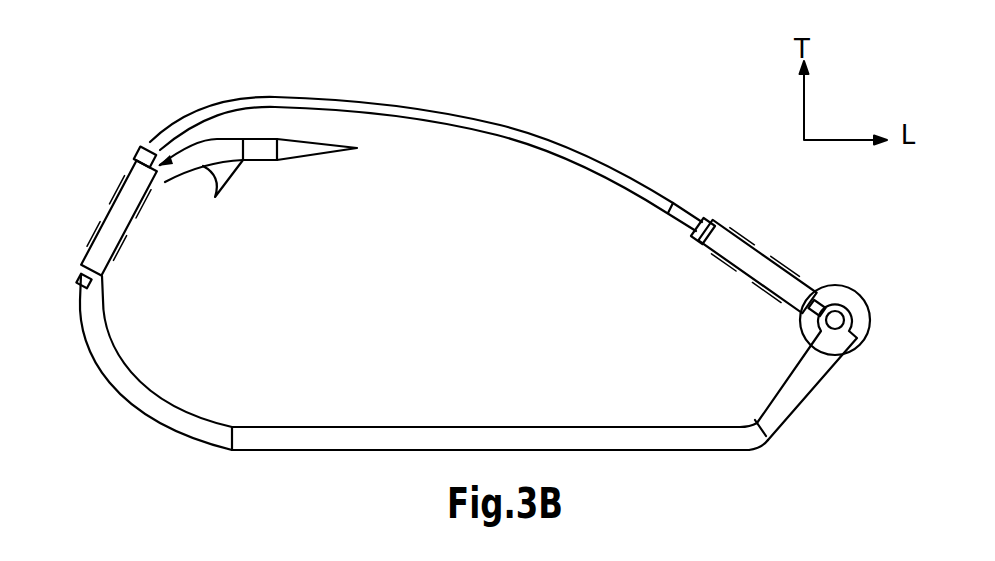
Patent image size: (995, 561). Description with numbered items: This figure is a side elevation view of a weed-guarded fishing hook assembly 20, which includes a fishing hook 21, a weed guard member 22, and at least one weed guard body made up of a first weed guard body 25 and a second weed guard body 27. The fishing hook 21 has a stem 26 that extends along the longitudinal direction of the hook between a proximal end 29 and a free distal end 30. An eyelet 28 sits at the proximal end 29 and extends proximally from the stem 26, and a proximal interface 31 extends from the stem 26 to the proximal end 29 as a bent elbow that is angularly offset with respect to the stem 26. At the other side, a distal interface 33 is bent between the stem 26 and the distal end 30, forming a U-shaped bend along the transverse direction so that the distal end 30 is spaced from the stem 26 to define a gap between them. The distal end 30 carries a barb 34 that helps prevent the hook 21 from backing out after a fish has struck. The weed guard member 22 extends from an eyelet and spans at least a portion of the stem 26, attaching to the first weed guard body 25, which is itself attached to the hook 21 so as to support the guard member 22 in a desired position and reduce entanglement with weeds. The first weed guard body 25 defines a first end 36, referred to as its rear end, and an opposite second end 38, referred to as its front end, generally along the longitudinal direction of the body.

The weed-guarded fishing hook assembly 20 is at (122, 100).
The fishing hook 21 is at (358, 452).
The weed guard member 22 is at (477, 127).
The first weed guard body 25 is at (110, 195).
The stem 26 is at (627, 452).
The second weed guard body 27 is at (774, 245).
The eyelet 28 is at (870, 310).
The proximal end 29 is at (810, 400).
The free distal end 30 is at (267, 160).
The proximal interface 31 is at (755, 447).
The distal interface 33 is at (112, 390).
The barb 34 is at (230, 177).
The first end 36 is at (77, 278).
The second end 38 is at (142, 148).